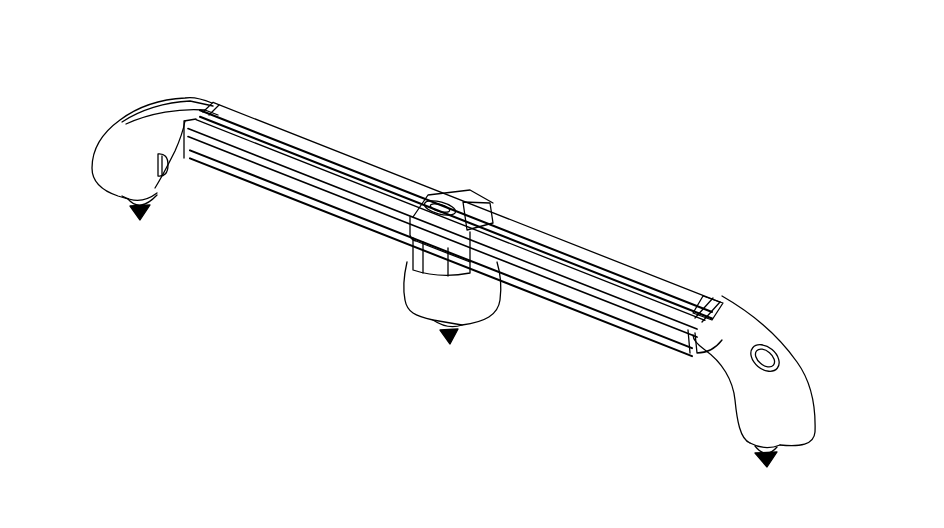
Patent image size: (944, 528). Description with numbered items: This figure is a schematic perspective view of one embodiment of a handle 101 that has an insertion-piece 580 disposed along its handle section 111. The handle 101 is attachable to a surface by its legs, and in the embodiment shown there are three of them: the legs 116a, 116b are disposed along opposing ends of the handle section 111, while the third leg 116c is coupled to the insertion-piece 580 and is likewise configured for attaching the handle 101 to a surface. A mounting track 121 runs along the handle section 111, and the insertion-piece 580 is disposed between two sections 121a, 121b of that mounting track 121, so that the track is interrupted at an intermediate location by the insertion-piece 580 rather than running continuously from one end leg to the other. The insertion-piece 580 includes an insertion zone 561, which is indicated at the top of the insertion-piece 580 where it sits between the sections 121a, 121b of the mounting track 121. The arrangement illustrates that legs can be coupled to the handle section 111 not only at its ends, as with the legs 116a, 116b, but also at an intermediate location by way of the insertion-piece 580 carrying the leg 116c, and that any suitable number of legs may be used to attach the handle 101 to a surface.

The handle 101 is at (576, 134).
The handle section 111 is at (280, 230).
The mounting track 121 is at (642, 218).
The first section of the mounting track 121a is at (577, 253).
The second section of the mounting track 121b is at (328, 157).
The leg 116a is at (807, 350).
The leg 116b is at (97, 82).
The leg 116c is at (511, 336).
The insertion-piece 580 is at (458, 198).
The insertion zone 561 is at (478, 208).